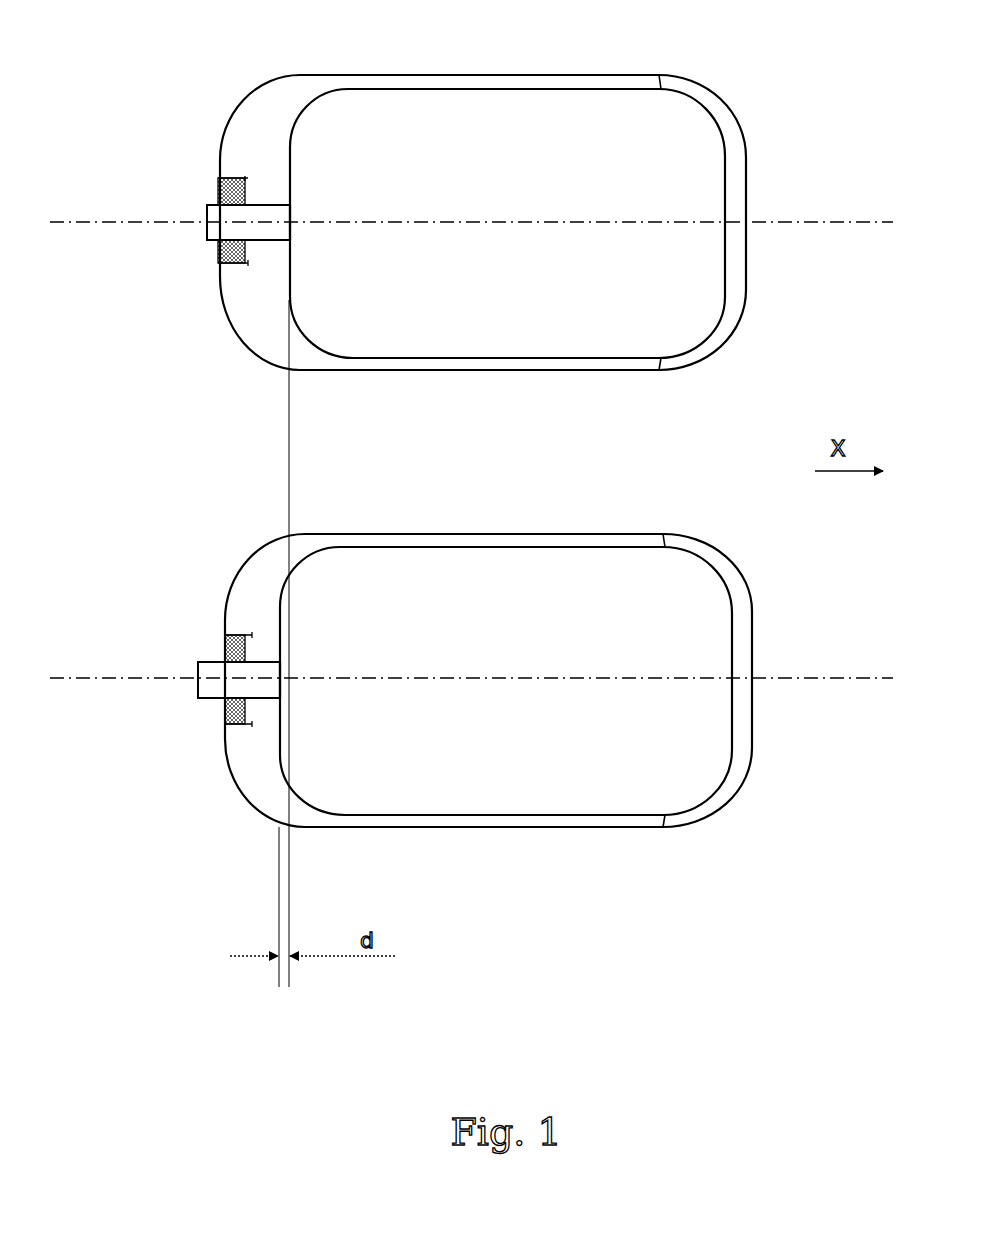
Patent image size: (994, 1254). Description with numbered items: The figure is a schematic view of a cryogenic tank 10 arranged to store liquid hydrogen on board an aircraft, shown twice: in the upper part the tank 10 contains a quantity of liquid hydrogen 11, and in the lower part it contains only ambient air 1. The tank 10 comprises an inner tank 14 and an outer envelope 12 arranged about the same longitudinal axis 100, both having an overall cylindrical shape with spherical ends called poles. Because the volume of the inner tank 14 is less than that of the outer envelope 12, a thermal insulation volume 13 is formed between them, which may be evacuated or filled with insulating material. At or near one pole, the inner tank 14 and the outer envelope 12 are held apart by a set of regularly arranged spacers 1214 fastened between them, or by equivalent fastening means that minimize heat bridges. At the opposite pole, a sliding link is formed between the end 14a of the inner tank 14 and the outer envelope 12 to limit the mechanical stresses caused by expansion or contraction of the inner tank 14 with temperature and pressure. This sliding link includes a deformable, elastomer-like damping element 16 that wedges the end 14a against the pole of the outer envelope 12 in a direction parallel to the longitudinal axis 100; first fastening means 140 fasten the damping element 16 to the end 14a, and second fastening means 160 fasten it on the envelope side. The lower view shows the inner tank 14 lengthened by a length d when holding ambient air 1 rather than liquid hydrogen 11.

The ambient air 1 is at (562, 661).
The cryogenic tank 10 is at (160, 64).
The liquid hydrogen 11 is at (562, 203).
The outer envelope 12 is at (716, 97).
The thermal insulation volume 13 is at (326, 364).
The inner tank 14 is at (455, 91).
The end of the inner tank 14a is at (293, 215).
The damping element 16 is at (219, 183).
The longitudinal axis 100 is at (822, 224).
The first fastening means 140 is at (262, 204).
The second fastening means 160 is at (235, 268).
The spacers 1214 is at (657, 74).